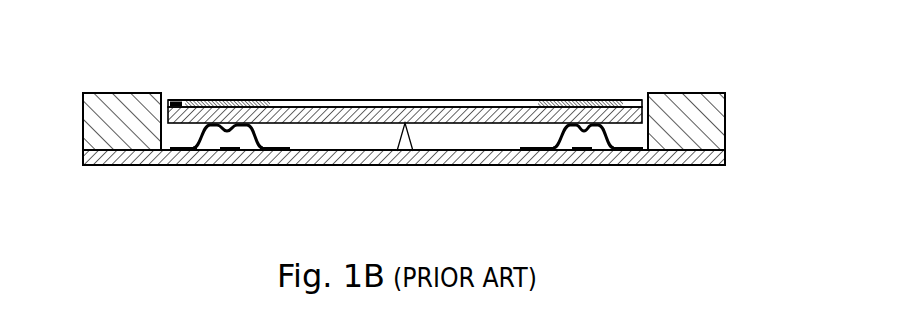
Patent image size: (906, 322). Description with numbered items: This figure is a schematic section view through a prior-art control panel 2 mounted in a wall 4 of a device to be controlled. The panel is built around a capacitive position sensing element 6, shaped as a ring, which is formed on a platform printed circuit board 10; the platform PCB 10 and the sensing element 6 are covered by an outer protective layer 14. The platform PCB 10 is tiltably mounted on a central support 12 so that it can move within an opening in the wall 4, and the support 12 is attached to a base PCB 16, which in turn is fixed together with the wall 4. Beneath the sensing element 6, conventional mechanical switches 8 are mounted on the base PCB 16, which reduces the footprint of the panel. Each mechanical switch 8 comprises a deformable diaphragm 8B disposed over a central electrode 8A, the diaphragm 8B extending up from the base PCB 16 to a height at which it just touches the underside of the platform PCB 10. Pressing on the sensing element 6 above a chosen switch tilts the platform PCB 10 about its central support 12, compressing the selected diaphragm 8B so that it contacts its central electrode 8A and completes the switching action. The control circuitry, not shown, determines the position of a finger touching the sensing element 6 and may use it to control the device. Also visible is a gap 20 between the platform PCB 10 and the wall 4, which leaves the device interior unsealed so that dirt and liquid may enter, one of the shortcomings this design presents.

The control panel 2 is at (388, 95).
The wall 4 is at (88, 119).
The capacitive position sensing element 6 is at (216, 103).
The mechanical switch 8 is at (257, 163).
The central electrode 8A is at (231, 163).
The deformable diaphragm 8B is at (182, 163).
The platform printed circuit board 10 is at (505, 107).
The central support 12 is at (405, 123).
The outer protective layer 14 is at (276, 104).
The base PCB 16 is at (112, 166).
The gap 20 is at (166, 98).